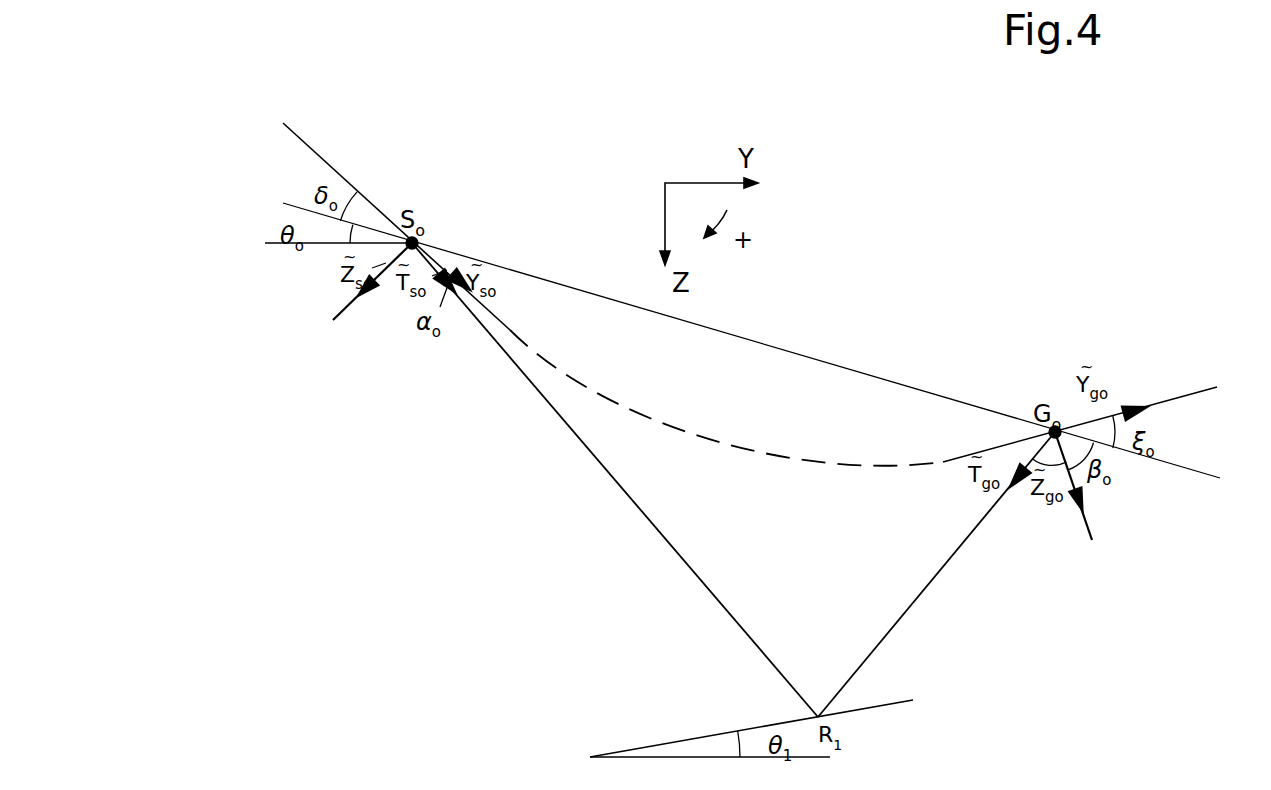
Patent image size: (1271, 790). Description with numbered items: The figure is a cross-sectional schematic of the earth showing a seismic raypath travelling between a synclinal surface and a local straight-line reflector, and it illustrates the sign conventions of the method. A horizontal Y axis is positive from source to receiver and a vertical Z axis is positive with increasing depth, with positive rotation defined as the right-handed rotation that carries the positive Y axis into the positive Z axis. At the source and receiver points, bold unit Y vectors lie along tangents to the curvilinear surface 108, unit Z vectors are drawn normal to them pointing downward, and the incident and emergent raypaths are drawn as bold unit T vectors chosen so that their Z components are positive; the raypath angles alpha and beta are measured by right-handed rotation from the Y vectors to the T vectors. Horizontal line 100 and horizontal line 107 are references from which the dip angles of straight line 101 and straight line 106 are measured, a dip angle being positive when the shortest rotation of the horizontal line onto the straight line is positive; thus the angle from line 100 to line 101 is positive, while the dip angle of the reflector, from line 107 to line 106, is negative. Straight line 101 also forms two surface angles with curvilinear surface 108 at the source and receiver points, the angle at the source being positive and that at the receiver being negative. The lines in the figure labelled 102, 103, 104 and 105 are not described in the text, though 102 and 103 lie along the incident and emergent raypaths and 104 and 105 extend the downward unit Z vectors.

The horizontal line 100 is at (312, 248).
The straight line 101 is at (751, 344).
The line from satellite S0 to reference point R1 102 is at (683, 560).
The line from ground station G0 to reference point R1 103 is at (903, 613).
The Z axis vector of satellite S0 104 is at (356, 303).
The Z axis vector of ground station G0 105 is at (1103, 505).
The straight line 106 is at (782, 722).
The horizontal line 107 is at (738, 761).
The curvilinear surface 108 is at (749, 285).